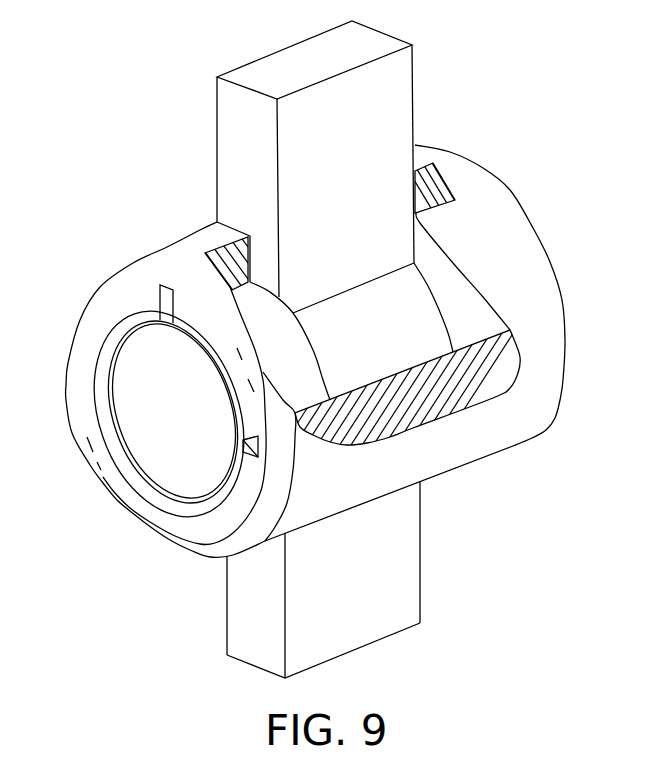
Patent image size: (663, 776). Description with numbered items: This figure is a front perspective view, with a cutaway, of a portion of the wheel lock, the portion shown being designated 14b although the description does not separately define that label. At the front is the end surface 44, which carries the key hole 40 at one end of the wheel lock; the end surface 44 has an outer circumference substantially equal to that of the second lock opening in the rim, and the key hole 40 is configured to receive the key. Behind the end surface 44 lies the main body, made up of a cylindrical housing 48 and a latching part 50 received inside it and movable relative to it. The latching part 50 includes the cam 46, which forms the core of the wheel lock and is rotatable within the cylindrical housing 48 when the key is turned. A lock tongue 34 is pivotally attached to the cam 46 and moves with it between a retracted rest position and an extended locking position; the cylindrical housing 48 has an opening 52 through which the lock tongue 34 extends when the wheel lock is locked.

The lock tongue 34 is at (413, 88).
The end surface 44 is at (113, 298).
The bore 14b is at (172, 442).
The key hole 40 is at (168, 303).
The opening 52 is at (250, 262).
The cam 46 is at (400, 323).
The cylindrical housing 48 is at (428, 192).
The latching part 50 is at (542, 165).